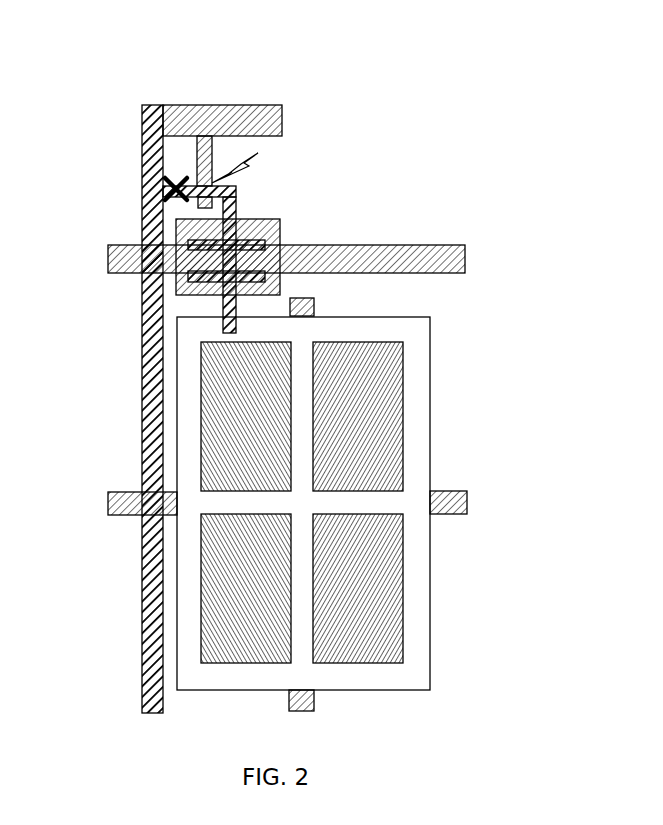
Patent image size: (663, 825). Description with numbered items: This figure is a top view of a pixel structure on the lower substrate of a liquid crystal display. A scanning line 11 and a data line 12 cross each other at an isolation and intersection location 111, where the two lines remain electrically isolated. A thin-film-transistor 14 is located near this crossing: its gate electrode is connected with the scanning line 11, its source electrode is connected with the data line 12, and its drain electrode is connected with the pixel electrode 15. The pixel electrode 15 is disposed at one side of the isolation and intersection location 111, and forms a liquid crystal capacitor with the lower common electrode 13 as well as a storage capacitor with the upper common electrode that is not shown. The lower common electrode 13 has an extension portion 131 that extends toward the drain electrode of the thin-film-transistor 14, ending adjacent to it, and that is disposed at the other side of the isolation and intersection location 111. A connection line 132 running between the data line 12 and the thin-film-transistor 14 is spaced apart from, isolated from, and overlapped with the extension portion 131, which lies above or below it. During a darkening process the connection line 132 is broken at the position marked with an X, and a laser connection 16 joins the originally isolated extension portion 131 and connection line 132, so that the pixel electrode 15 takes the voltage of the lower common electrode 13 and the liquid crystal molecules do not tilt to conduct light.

The scanning line 11 is at (112, 273).
The isolation and intersection location 111 is at (145, 256).
The data line 12 is at (147, 372).
The lower common electrode 13 is at (282, 110).
The extension portion 131 is at (197, 147).
The connection line 132 is at (237, 188).
The thin-film-transistor 14 is at (195, 292).
The pixel electrode 15 is at (415, 404).
The laser connection 16 is at (253, 158).